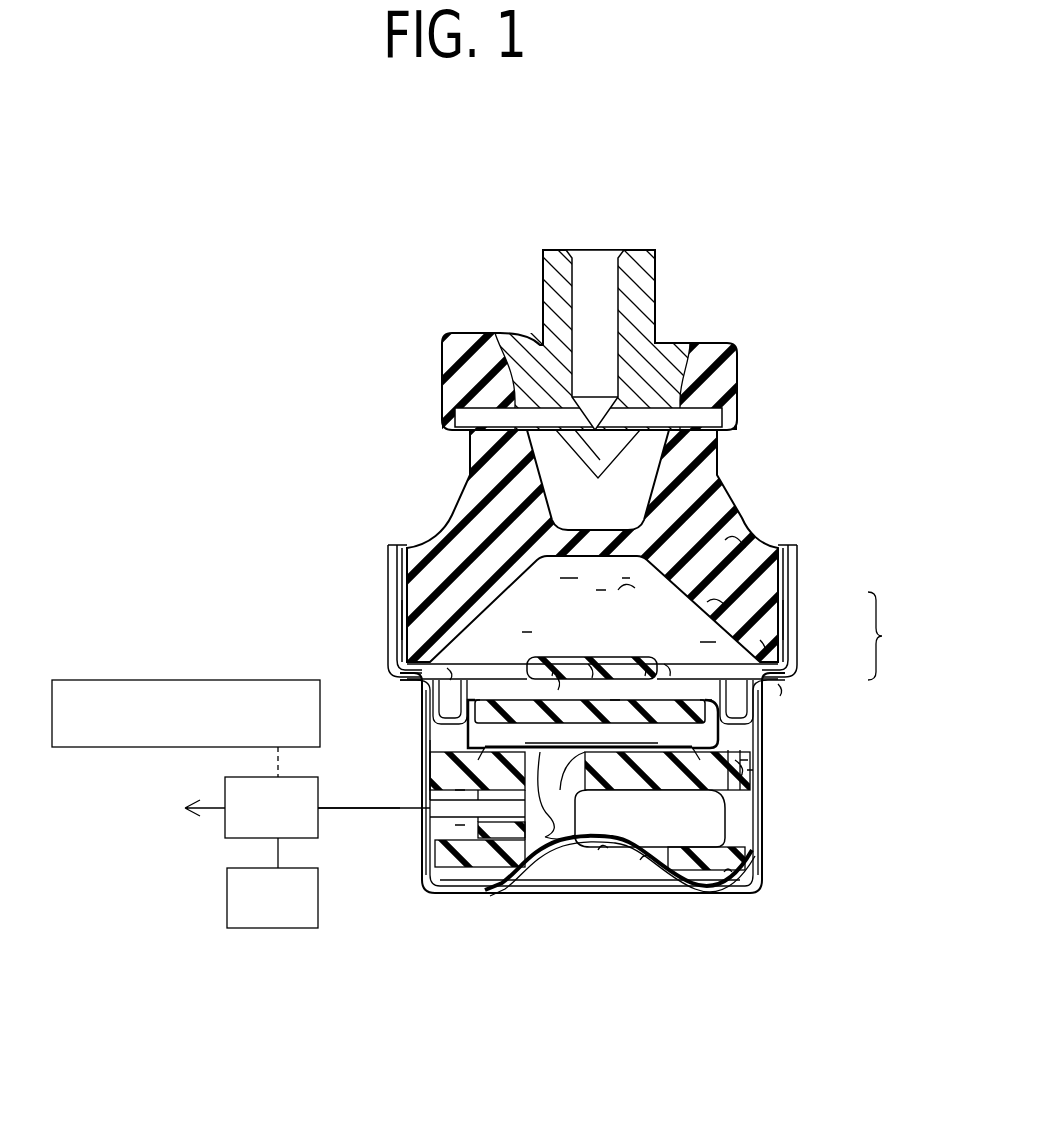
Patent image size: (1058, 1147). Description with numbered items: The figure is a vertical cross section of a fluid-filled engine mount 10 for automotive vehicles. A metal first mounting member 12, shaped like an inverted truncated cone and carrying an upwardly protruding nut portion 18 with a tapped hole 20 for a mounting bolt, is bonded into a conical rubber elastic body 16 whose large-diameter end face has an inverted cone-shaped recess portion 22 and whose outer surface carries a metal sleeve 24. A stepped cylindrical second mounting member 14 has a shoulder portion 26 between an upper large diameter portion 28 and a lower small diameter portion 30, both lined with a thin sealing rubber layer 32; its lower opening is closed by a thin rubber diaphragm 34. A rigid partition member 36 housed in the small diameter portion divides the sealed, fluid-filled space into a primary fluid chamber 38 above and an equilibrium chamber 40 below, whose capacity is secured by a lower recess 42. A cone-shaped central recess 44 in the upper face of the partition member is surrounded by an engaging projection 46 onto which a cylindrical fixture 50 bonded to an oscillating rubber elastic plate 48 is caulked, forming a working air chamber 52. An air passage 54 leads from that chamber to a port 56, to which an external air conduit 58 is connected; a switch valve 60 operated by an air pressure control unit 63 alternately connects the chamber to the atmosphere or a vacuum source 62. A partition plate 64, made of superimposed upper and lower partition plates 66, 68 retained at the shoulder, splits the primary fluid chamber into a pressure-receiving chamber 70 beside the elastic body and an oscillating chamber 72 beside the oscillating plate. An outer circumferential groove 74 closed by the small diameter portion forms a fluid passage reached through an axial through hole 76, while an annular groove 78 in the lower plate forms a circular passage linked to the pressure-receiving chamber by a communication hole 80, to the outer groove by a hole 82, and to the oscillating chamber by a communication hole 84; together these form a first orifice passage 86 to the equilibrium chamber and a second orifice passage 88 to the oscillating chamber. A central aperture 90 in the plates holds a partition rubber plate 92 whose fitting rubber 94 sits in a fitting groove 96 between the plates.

The engine mount 10 is at (718, 262).
The first mounting member 12 is at (568, 487).
The second mounting member 14 is at (782, 817).
The rubber elastic body 16 is at (725, 540).
The nut portion 18 is at (553, 292).
The tapped hole 20 is at (603, 313).
The recess portion 22 is at (490, 607).
The metal sleeve 24 is at (786, 572).
The shoulder portion 26 is at (410, 677).
The large diameter portion 28 is at (390, 597).
The small diameter portion 30 is at (425, 760).
The sealing rubber layer 32 is at (402, 642).
The diaphragm 34 is at (640, 862).
The partition member 36 is at (633, 847).
The primary fluid chamber 38 is at (712, 596).
The equilibrium chamber 40 is at (455, 878).
The lower recess 42 is at (705, 872).
The central recess 44 is at (598, 850).
The engaging projection 46 is at (500, 705).
The oscillating rubber elastic plate 48 is at (612, 703).
The cylindrical fixture 50 is at (468, 731).
The working air chamber 52 is at (552, 845).
The air passage 54 is at (530, 850).
The port 56 is at (495, 818).
The air conduit 58 is at (395, 822).
The switch valve 60 is at (270, 778).
The vacuum source 62 is at (272, 929).
The air pressure control unit 63 is at (208, 683).
The partition plate 64 is at (888, 636).
The upper partition plate 66 is at (760, 645).
The lower partition plate 68 is at (778, 688).
The pressure-receiving chamber 70 is at (618, 590).
The oscillating chamber 72 is at (560, 678).
The outer circumferential groove 74 is at (748, 872).
The through hole 76 is at (747, 773).
The annular groove 78 is at (440, 712).
The communication hole 80 is at (450, 672).
The hole 82 is at (733, 732).
The communication hole 84 is at (672, 672).
The first orifice passage 86 is at (728, 875).
The second orifice passage 88 is at (740, 708).
The aperture 90 is at (555, 665).
The partition rubber plate 92 is at (593, 672).
The fitting rubber 94 is at (668, 668).
The fitting groove 96 is at (647, 666).